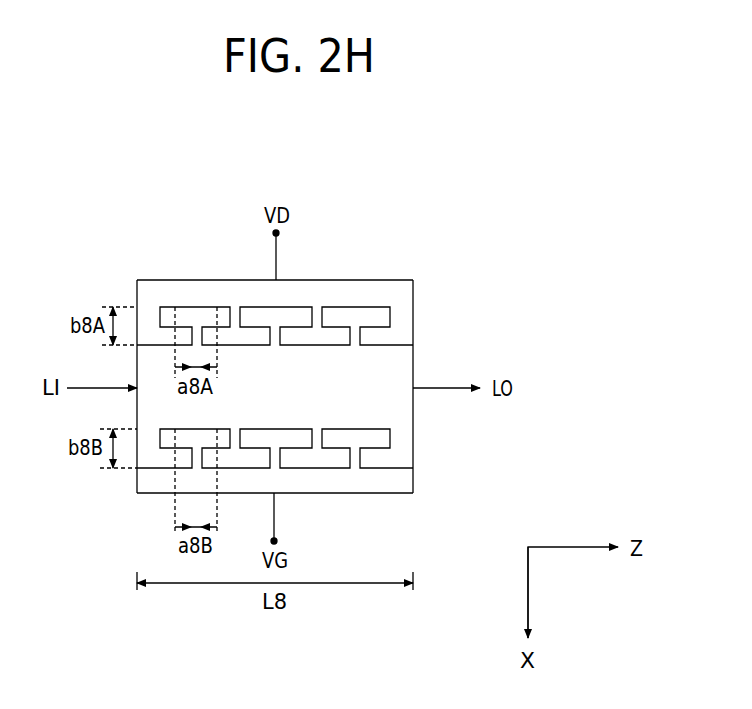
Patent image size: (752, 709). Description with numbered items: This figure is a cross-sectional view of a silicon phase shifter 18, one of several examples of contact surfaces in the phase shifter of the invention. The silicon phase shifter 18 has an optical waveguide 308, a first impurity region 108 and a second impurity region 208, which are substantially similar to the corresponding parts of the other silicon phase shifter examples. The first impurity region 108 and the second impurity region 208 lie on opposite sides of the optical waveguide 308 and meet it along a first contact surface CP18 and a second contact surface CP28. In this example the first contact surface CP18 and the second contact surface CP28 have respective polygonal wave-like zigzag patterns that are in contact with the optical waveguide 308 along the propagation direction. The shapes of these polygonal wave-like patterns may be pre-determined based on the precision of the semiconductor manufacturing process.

The silicon phase shifter 18 is at (262, 150).
The first impurity region 108 is at (347, 283).
The optical waveguide 308 is at (403, 365).
The second impurity region 208 is at (403, 482).
The first contact surface CP18 is at (390, 319).
The second contact surface CP28 is at (393, 465).